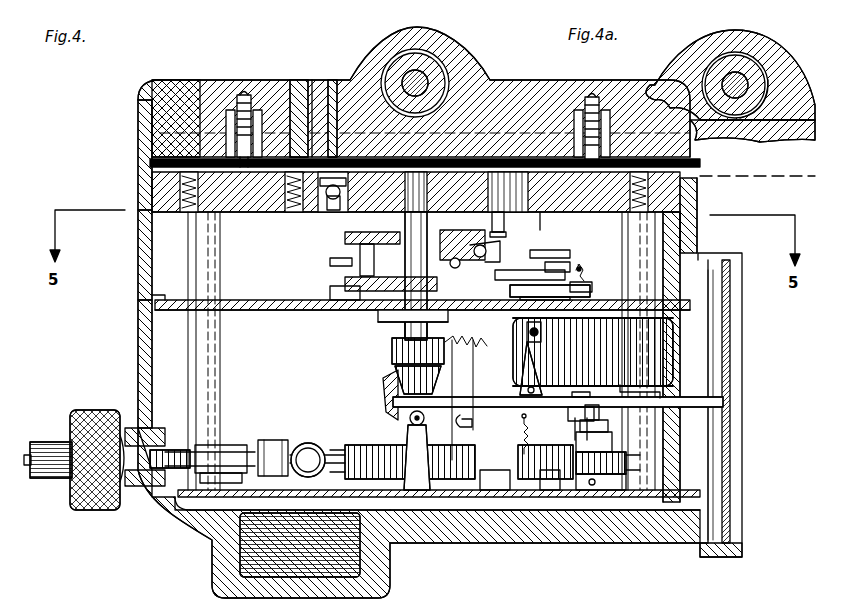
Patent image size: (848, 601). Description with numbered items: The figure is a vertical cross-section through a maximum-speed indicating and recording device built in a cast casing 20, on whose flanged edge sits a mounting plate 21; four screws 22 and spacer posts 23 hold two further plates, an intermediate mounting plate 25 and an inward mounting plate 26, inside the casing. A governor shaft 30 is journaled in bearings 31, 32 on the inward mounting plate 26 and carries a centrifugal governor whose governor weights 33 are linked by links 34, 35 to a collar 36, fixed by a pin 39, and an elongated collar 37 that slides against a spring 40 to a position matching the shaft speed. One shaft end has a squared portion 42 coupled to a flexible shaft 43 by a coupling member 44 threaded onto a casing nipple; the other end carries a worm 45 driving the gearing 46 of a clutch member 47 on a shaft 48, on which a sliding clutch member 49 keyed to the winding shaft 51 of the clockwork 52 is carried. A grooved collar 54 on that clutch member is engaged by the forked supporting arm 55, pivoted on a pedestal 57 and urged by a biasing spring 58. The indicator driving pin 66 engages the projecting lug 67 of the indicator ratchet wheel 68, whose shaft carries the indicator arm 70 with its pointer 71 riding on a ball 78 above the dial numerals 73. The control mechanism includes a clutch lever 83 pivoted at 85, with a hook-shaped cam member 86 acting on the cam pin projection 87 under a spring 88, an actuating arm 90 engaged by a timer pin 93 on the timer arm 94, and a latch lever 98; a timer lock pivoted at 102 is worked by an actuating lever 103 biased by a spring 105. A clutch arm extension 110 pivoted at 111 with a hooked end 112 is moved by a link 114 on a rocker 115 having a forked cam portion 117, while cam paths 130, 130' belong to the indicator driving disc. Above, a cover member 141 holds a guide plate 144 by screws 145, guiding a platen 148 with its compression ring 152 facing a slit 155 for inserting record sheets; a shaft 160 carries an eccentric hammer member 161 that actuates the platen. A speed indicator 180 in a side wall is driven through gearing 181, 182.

In FIG. 4, the casing 20 is at (138, 236).
In FIG. 4, the mounting plate 21 is at (138, 197).
In FIG. 4, the screws 22 is at (186, 214).
In FIG. 4, the spacer posts 23 is at (186, 278).
In FIG. 4, the intermediate mounting plate 25 is at (160, 295).
In FIG. 4, the inward mounting plate 26 is at (362, 500).
In FIG. 4, the governor shaft 30 is at (150, 400).
In FIG. 4, the bearing 31 is at (268, 485).
In FIG. 4, the bearing 32 is at (503, 470).
In FIG. 4, the governor weights 33 is at (305, 470).
In FIG. 4, the link 34 is at (280, 440).
In FIG. 4, the link 35 is at (308, 458).
In FIG. 4, the collar 36 is at (252, 445).
In FIG. 4, the elongated collar 37 is at (346, 440).
In FIG. 4, the pin 39 is at (246, 434).
In FIG. 4, the spring 40 is at (300, 405).
In FIG. 4, the squared portion 42 is at (160, 473).
In FIG. 4, the flexible shaft 43 is at (32, 478).
In FIG. 4, the coupling member 44 is at (95, 510).
In FIG. 4, the worm 45 is at (583, 480).
In FIG. 4, the gearing 46 is at (640, 470).
In FIG. 4, the clutch member 47 is at (650, 455).
In FIG. 4, the shaft 48 is at (660, 440).
In FIG. 4, the clutch member 49 is at (650, 420).
In FIG. 4, the winding shaft 51 is at (620, 385).
In FIG. 4, the clockwork 52 is at (655, 316).
In FIG. 4, the grooved collar 54 is at (578, 408).
In FIG. 4, the supporting arm 55 is at (535, 418).
In FIG. 4, the pedestal 57 is at (420, 430).
In FIG. 4, the biasing spring 58 is at (527, 430).
In FIG. 4, the driving pin 66 is at (355, 285).
In FIG. 4, the projecting lug 67 is at (370, 250).
In FIG. 4, the indicator ratchet wheel 68 is at (345, 232).
In FIG. 4, the indicator arm 70 is at (378, 185).
In FIG. 4, the pointer 71 is at (334, 120).
In FIG. 4, the dial numerals 73 is at (290, 205).
In FIG. 4, the ball 78 is at (345, 265).
In FIG. 4, the clutch lever 83 is at (478, 385).
In FIG. 4, the pivot 85 is at (527, 334).
In FIG. 4, the hook-shaped cam member 86 is at (468, 428).
In FIG. 4, the cam pin projection 87 is at (457, 412).
In FIG. 4, the spring 88 is at (462, 336).
In FIG. 4, the actuating arm 90 is at (500, 275).
In FIG. 4, the timer pin 93 is at (540, 256).
In FIG. 4, the timer arm 94 is at (560, 268).
In FIG. 4, the latch lever 98 is at (502, 368).
In FIG. 4, the pivot 102 is at (590, 286).
In FIG. 4, the actuating lever 103 is at (565, 286).
In FIG. 4, the spring 105 is at (583, 278).
In FIG. 4, the clutch arm extension 110 is at (450, 258).
In FIG. 4, the pivot 111 is at (478, 258).
In FIG. 4, the hooked end 112 is at (434, 192).
In FIG. 4, the link 114 is at (468, 205).
In FIG. 4, the rocker 115 is at (503, 226).
In FIG. 4, the forked cam portion 117 is at (592, 97).
In FIG. 4, the cam path 130 is at (422, 295).
In FIG. 4, the cam path 130' is at (422, 328).
In FIG. 4, the cover member 141 is at (160, 100).
In FIG. 4, the guide plate 144 is at (236, 110).
In FIG. 4, the screws 145 is at (243, 95).
In FIG. 4, the platen 148 is at (296, 118).
In FIG. 4, the compression ring 152 is at (313, 120).
In FIG. 4, the slit 155 is at (708, 174).
In FIG. 4, the shaft 160 is at (432, 74).
In FIG. 4A, the shaft 160 is at (720, 90).
In FIG. 4, the hammer member 161 is at (445, 60).
In FIG. 4A, the hammer member 161 is at (768, 80).
In FIG. 4, the speed indicator 180 is at (742, 512).
In FIG. 4, the gearing 181 is at (395, 348).
In FIG. 4, the gearing 182 is at (398, 378).